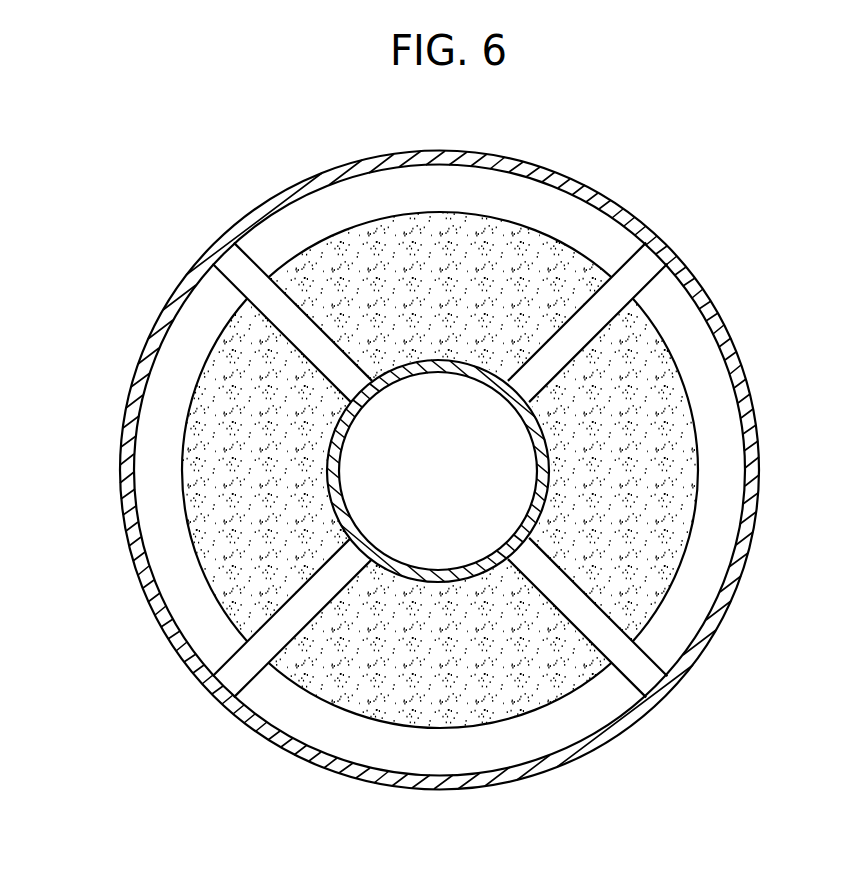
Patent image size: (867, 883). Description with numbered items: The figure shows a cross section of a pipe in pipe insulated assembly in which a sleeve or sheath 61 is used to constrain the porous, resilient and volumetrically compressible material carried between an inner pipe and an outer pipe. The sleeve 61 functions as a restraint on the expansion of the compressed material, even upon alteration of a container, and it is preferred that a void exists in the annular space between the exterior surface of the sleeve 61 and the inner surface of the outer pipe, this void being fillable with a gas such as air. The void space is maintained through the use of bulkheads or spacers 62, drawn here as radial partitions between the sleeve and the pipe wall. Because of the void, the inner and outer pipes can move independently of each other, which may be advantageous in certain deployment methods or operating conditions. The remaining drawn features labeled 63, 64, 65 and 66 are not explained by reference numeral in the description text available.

The sleeve 61 is at (229, 321).
The spacers 62 is at (333, 470).
The filter media 63 is at (230, 518).
The partition rib 64 is at (245, 636).
The annular gap 65 is at (660, 640).
The filter media section 66 is at (568, 625).